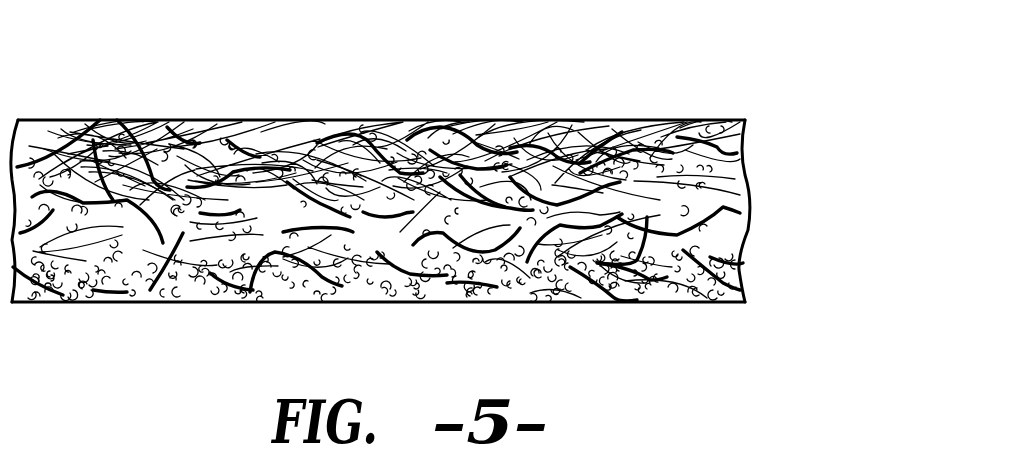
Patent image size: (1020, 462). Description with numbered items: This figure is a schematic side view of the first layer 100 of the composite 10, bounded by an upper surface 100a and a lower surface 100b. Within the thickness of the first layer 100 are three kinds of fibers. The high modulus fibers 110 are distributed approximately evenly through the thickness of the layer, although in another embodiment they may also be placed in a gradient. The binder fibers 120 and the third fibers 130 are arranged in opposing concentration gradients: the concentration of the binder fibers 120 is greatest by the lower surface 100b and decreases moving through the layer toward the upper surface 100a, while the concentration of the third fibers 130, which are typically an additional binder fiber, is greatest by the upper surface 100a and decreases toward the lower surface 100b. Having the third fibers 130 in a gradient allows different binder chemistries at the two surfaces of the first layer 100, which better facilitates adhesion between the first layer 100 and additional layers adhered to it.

The nonwoven fabric article 10 is at (596, 83).
The first layer 100 is at (777, 123).
The upper surface 100a is at (746, 303).
The lower surface 100b is at (745, 121).
The high modulus fibers 110 is at (153, 300).
The binder fibers 120 is at (297, 118).
The third fiber 130 is at (417, 302).